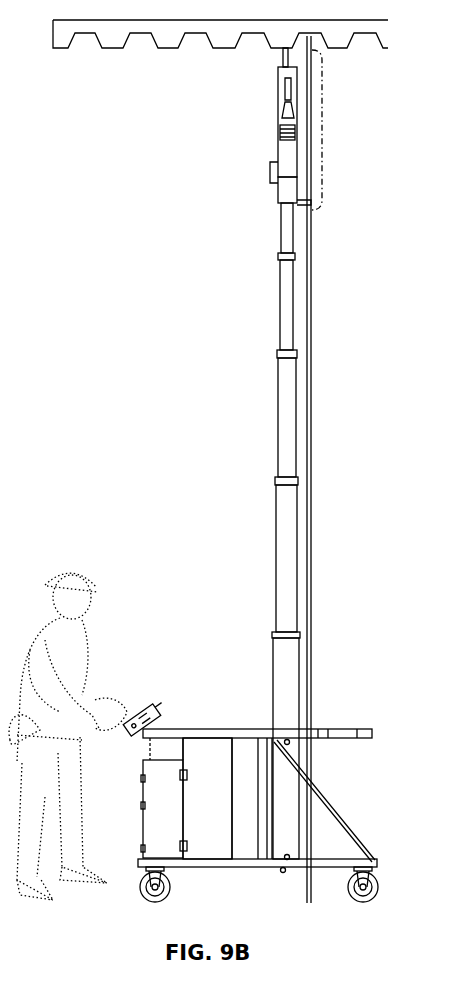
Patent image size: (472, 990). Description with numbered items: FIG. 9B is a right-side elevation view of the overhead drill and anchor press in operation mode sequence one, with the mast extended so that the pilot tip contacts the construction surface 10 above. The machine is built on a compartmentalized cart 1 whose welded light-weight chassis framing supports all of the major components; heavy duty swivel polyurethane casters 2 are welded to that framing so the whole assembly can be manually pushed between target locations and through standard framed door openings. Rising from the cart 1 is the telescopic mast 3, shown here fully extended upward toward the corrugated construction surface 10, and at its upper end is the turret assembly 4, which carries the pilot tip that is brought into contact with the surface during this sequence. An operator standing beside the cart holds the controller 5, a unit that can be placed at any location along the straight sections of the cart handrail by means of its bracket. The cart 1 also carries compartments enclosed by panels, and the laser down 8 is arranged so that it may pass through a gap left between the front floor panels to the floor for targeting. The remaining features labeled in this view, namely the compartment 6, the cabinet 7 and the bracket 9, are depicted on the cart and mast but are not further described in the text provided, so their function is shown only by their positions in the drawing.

The compartmentalized cart on casters 1 is at (348, 732).
The casters 2 is at (367, 861).
The telescopic mast 3 is at (301, 687).
The turret assembly 4 is at (328, 126).
The controller 5 is at (163, 704).
The compartment 6 is at (222, 764).
The cabinet 7 is at (158, 778).
The laser down 8 is at (313, 241).
The tool bracket 9 is at (310, 171).
The construction surface 10 is at (334, 51).